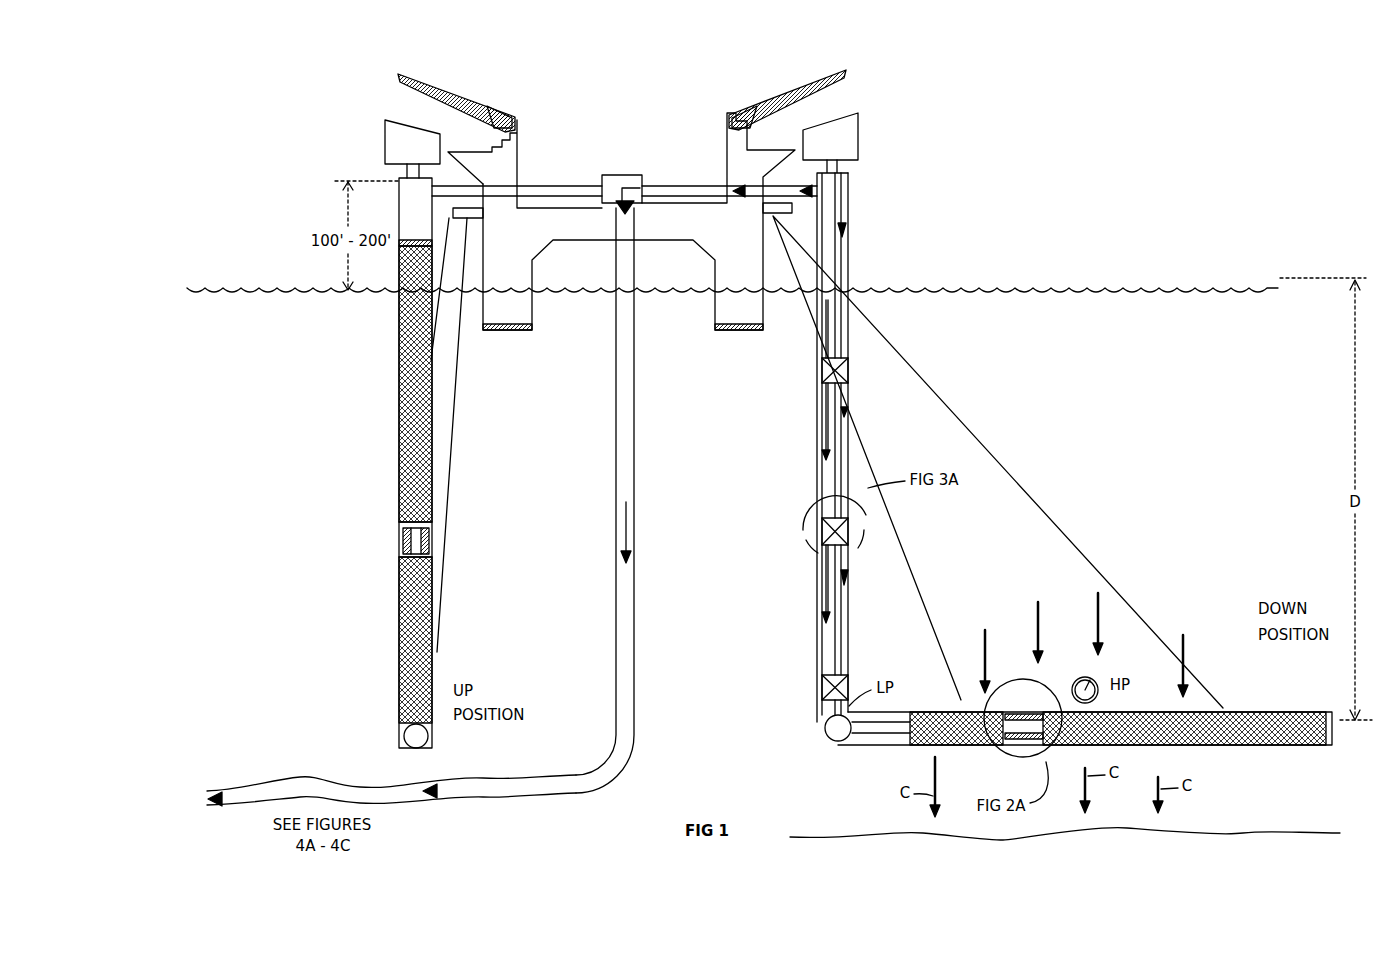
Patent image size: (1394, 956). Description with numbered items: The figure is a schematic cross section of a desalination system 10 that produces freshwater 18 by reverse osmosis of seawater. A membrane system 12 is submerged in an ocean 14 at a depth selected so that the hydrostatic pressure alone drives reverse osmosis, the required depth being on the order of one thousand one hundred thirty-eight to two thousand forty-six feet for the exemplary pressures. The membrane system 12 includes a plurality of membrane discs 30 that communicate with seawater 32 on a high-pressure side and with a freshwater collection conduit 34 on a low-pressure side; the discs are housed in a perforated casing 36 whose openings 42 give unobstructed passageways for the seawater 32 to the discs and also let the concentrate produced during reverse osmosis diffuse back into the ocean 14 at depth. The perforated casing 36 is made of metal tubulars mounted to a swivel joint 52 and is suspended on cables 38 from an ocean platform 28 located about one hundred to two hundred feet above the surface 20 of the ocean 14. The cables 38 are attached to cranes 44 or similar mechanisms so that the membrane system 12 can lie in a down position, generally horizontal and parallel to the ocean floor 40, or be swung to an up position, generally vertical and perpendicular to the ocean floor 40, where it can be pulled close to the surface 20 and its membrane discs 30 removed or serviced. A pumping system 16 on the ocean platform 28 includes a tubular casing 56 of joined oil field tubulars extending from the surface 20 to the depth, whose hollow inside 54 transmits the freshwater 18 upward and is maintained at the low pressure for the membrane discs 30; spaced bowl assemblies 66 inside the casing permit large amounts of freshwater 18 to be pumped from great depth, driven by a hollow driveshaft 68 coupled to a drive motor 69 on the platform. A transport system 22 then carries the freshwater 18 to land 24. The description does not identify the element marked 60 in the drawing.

The desalination system 10 is at (586, 99).
The membrane system 12 is at (449, 658).
The ocean 14 is at (1058, 347).
The pumping system 16 is at (864, 364).
The freshwater 18 is at (673, 187).
The surface of the ocean 20 is at (919, 286).
The transport system 22 is at (636, 575).
The land 24 is at (391, 775).
The ocean platform 28 is at (543, 207).
The membrane discs 30 is at (428, 530).
The seawater 32 is at (984, 637).
The freshwater collection conduit 34 is at (880, 744).
The perforated casing 36 is at (448, 438).
The cables 38 is at (439, 332).
The ocean floor 40 is at (1250, 833).
The openings 42 is at (417, 485).
The cranes 44 is at (430, 92).
The swivel joint 52 is at (433, 743).
The hollow inside 54 is at (840, 307).
The tubular casing 56 is at (851, 391).
The valve 60 is at (816, 374).
The bowl assemblies 66 is at (812, 533).
The hollow driveshaft 68 is at (849, 195).
The drive motor 69 is at (859, 130).